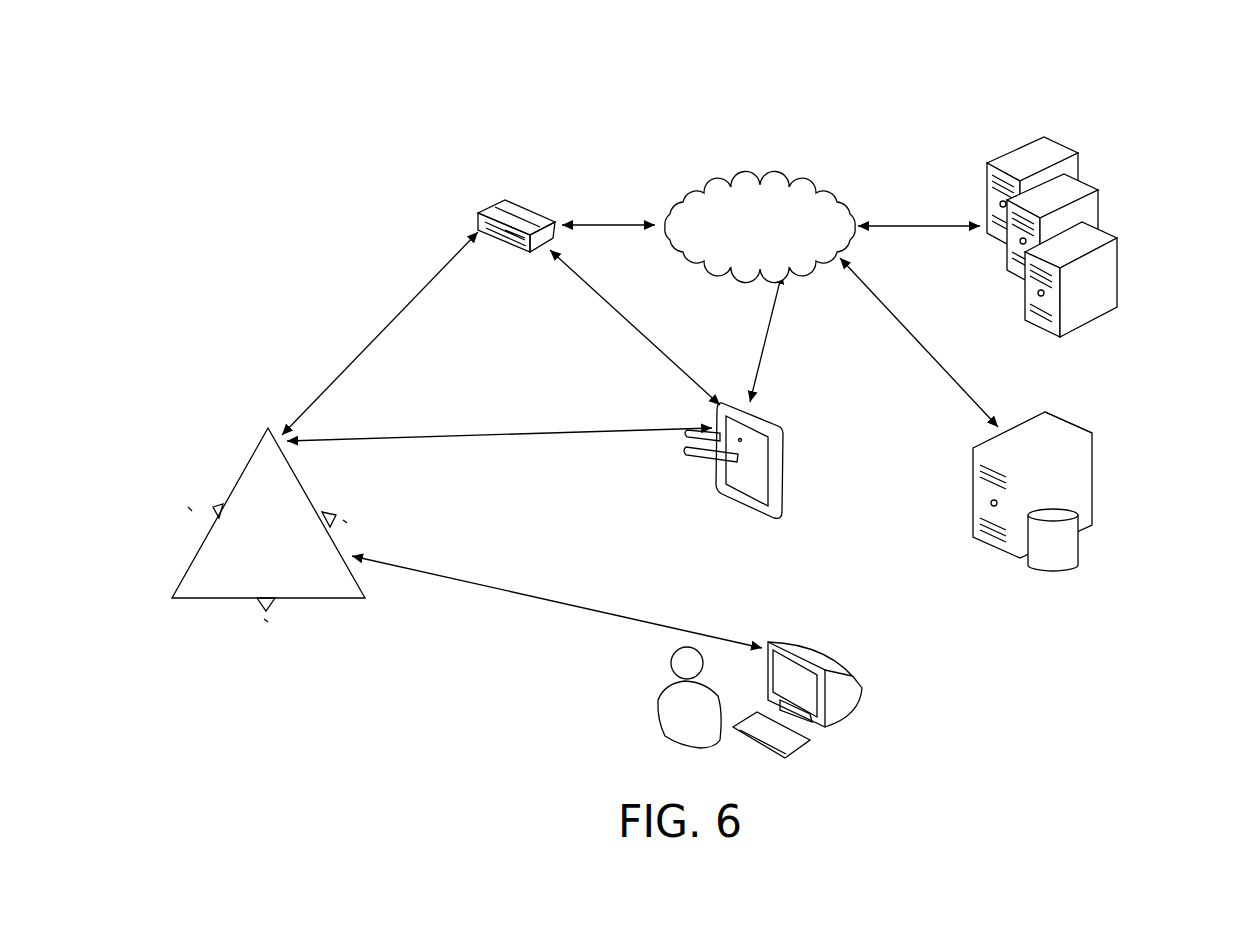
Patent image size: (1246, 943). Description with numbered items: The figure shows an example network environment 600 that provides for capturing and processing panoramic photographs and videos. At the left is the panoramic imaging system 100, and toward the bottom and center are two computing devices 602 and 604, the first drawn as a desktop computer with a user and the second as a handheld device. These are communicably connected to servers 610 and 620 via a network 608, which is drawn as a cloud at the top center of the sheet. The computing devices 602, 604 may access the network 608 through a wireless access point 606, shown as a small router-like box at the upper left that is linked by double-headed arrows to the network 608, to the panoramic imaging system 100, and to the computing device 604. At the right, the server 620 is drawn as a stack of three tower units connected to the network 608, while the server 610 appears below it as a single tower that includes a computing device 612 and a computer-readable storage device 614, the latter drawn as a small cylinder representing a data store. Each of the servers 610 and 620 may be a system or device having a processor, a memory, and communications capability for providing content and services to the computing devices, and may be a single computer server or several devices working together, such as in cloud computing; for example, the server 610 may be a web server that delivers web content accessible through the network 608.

The network environment 600 is at (940, 118).
The panoramic imaging system 100 is at (312, 600).
The computing device 602 is at (848, 690).
The computing device 604 is at (776, 470).
The wireless access point 606 is at (495, 200).
The network 608 is at (766, 186).
The server 610 is at (990, 566).
The computing device 612 is at (1063, 420).
The computer-readable storage device 614 is at (1080, 565).
The server 620 is at (1134, 278).